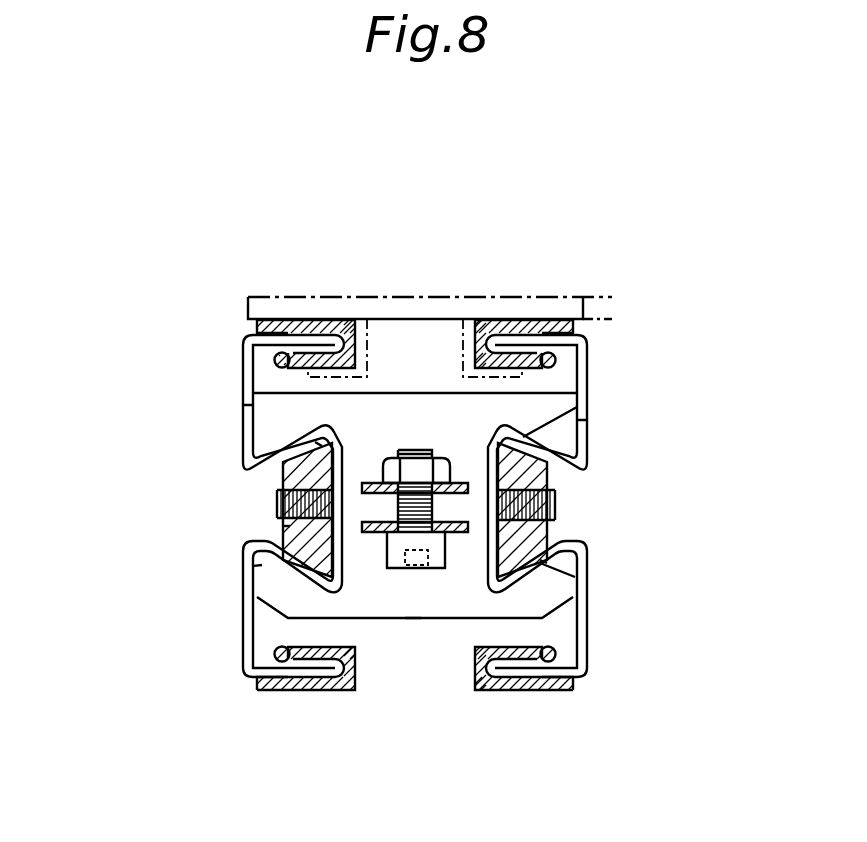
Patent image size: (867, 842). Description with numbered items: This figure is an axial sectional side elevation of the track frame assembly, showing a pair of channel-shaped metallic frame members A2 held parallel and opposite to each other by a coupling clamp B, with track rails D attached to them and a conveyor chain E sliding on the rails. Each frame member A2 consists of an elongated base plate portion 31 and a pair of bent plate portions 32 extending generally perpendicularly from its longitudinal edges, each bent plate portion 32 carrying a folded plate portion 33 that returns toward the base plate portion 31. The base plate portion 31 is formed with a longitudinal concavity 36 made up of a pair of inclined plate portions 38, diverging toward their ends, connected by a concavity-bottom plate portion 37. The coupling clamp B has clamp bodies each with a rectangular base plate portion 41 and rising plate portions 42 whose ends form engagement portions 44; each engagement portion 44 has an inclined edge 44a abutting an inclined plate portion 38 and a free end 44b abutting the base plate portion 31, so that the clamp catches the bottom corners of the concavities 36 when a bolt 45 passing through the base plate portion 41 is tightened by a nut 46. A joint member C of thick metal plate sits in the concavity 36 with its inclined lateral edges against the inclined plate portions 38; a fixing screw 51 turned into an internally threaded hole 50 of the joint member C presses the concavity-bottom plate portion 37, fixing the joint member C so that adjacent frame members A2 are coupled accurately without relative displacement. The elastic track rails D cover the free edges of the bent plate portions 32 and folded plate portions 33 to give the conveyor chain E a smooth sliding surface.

The base plate portion 31 is at (247, 382).
The bent plate portion 32 is at (292, 322).
The folded plate portion 33 is at (315, 345).
The concavity 36 is at (283, 486).
The concavity-bottom plate portion 37 is at (547, 562).
The inclined plate portion 38 is at (577, 407).
The base plate portion of clamp body 41 is at (372, 535).
The rising plate portion 42 is at (290, 602).
The engagement portion 44 is at (372, 592).
The inclined edge 44a is at (283, 528).
The free end 44b is at (262, 566).
The bolt 45 is at (438, 554).
The nut 46 is at (388, 457).
The internally threaded hole 50 is at (558, 505).
The fixing screw 51 is at (280, 500).
The conveyor chain E is at (248, 297).
The track rail D is at (463, 318).
The joint member C is at (320, 445).
The coupling clamp B is at (413, 620).
The frame member A2 is at (248, 407).